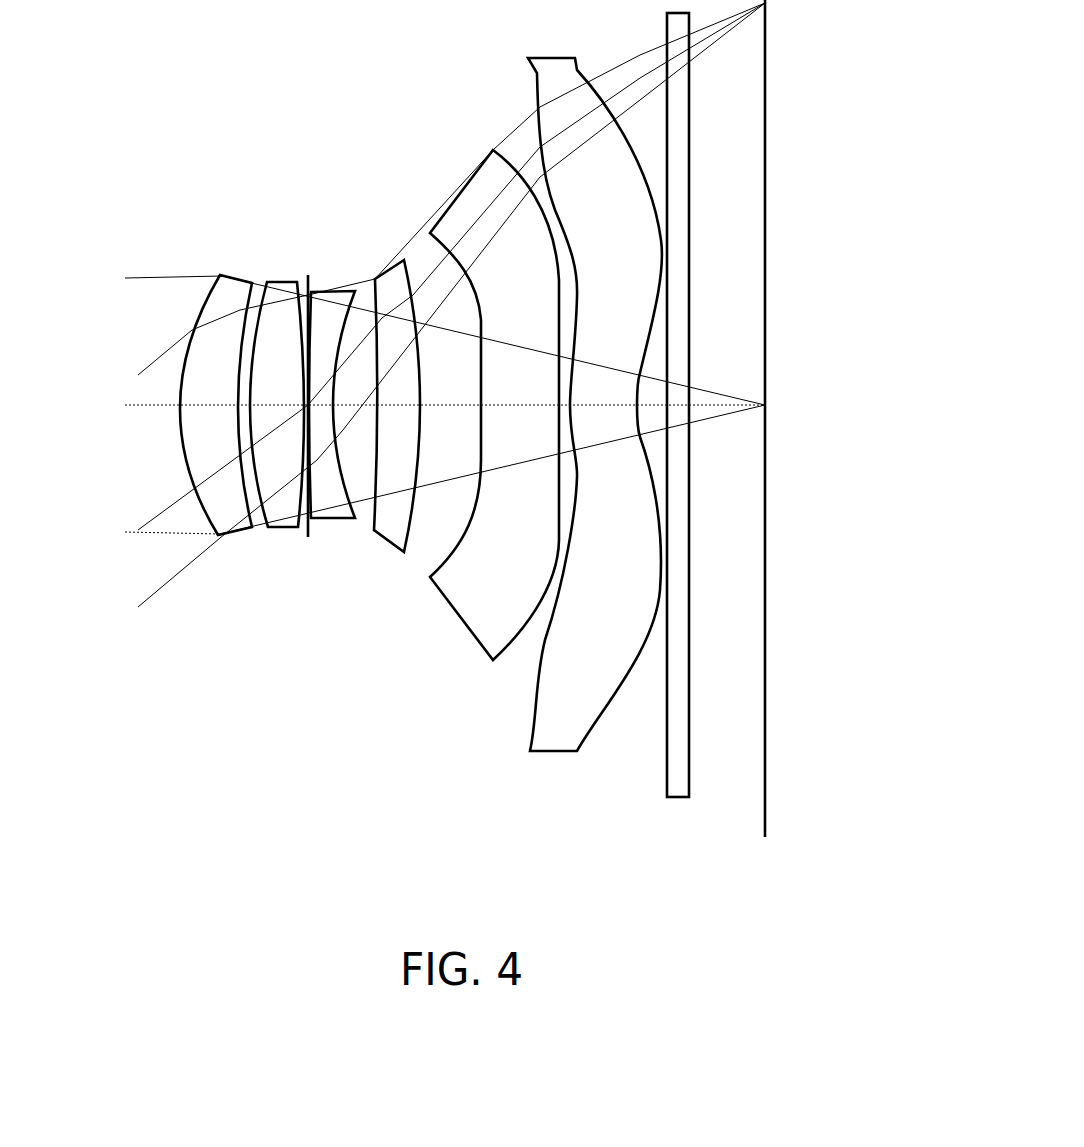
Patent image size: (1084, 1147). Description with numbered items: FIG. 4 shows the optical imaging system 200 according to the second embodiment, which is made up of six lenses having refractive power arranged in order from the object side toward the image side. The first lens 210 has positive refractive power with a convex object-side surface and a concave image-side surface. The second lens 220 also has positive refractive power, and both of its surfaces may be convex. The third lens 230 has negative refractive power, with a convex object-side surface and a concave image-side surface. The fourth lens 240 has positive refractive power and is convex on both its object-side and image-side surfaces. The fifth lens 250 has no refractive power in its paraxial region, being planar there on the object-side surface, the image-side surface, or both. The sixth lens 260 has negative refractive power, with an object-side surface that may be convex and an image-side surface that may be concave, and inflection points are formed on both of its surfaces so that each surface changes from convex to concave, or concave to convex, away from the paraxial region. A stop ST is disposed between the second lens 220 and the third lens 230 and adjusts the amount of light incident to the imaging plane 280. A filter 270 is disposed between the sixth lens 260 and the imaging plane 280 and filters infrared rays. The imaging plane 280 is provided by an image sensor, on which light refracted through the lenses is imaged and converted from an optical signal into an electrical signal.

The optical imaging system 200 is at (450, 443).
The first lens 210 is at (242, 537).
The second lens 220 is at (292, 532).
The third lens 230 is at (342, 530).
The fourth lens 240 is at (388, 552).
The fifth lens 250 is at (461, 620).
The sixth lens 260 is at (553, 752).
The filter 270 is at (678, 797).
The imaging plane 280 is at (765, 820).
The stop ST is at (308, 277).